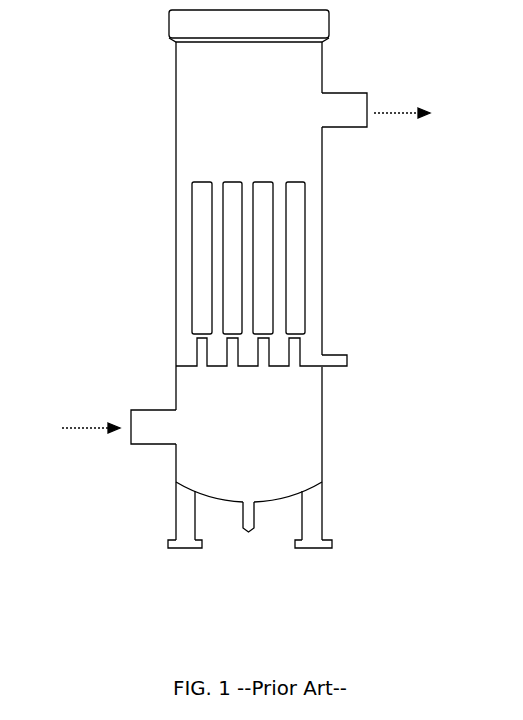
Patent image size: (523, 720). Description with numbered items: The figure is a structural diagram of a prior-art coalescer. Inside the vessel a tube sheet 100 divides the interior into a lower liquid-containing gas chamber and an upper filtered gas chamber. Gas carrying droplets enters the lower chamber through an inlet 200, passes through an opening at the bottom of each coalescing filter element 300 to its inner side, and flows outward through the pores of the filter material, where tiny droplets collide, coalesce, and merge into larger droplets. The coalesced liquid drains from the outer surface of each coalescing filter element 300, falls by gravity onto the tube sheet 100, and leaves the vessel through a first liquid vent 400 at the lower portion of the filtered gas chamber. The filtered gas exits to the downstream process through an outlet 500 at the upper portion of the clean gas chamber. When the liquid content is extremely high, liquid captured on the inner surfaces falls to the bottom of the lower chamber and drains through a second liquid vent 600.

The tube sheet 100 is at (177, 362).
The inlet 200 is at (124, 412).
The coalescing filter element 300 is at (305, 250).
The first liquid vent 400 is at (347, 360).
The outlet 500 is at (368, 100).
The second liquid vent 600 is at (249, 531).